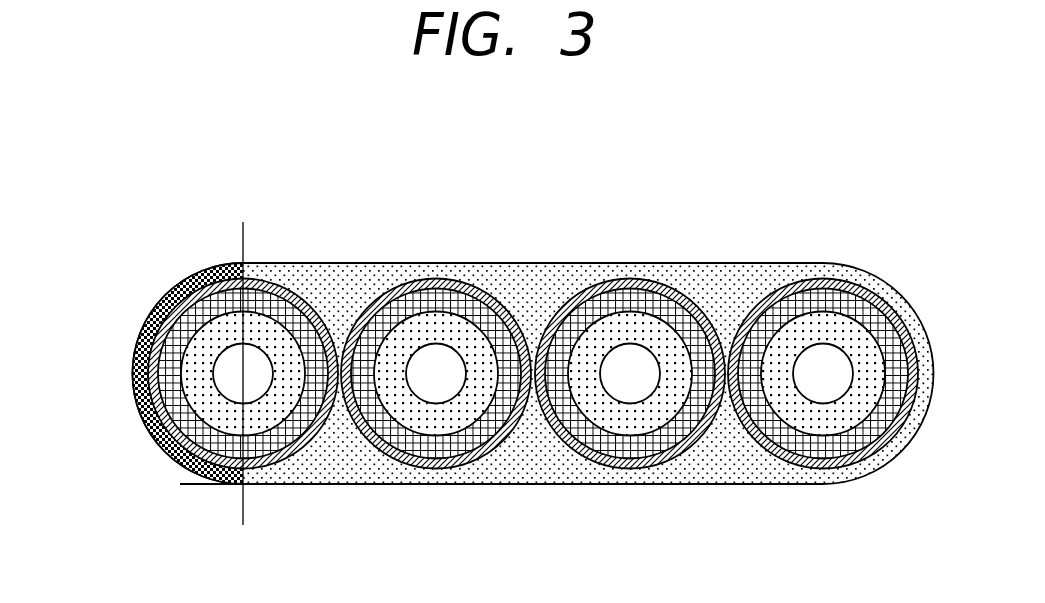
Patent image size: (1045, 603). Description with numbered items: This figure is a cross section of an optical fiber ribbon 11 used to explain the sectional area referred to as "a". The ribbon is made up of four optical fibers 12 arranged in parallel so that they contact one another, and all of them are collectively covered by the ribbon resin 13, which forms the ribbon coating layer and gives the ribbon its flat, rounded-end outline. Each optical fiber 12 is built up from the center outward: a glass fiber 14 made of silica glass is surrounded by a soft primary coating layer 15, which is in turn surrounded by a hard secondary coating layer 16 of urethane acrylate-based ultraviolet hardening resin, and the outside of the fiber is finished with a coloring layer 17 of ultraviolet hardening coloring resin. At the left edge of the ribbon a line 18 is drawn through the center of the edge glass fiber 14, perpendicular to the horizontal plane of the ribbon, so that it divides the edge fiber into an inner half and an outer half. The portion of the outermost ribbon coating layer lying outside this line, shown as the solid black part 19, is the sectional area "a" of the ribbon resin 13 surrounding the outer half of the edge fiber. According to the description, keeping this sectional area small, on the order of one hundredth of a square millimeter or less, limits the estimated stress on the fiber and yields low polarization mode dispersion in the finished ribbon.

The optical fiber ribbon 11 is at (737, 263).
The optical fiber 12 is at (440, 278).
The ribbon resin 13 is at (720, 468).
The glass fiber 14 is at (230, 363).
The primary coating layer 15 is at (165, 362).
The secondary coating layer 16 is at (150, 418).
The coloring layer 17 is at (175, 460).
The line 18 is at (243, 238).
The solid black part 19 is at (205, 484).